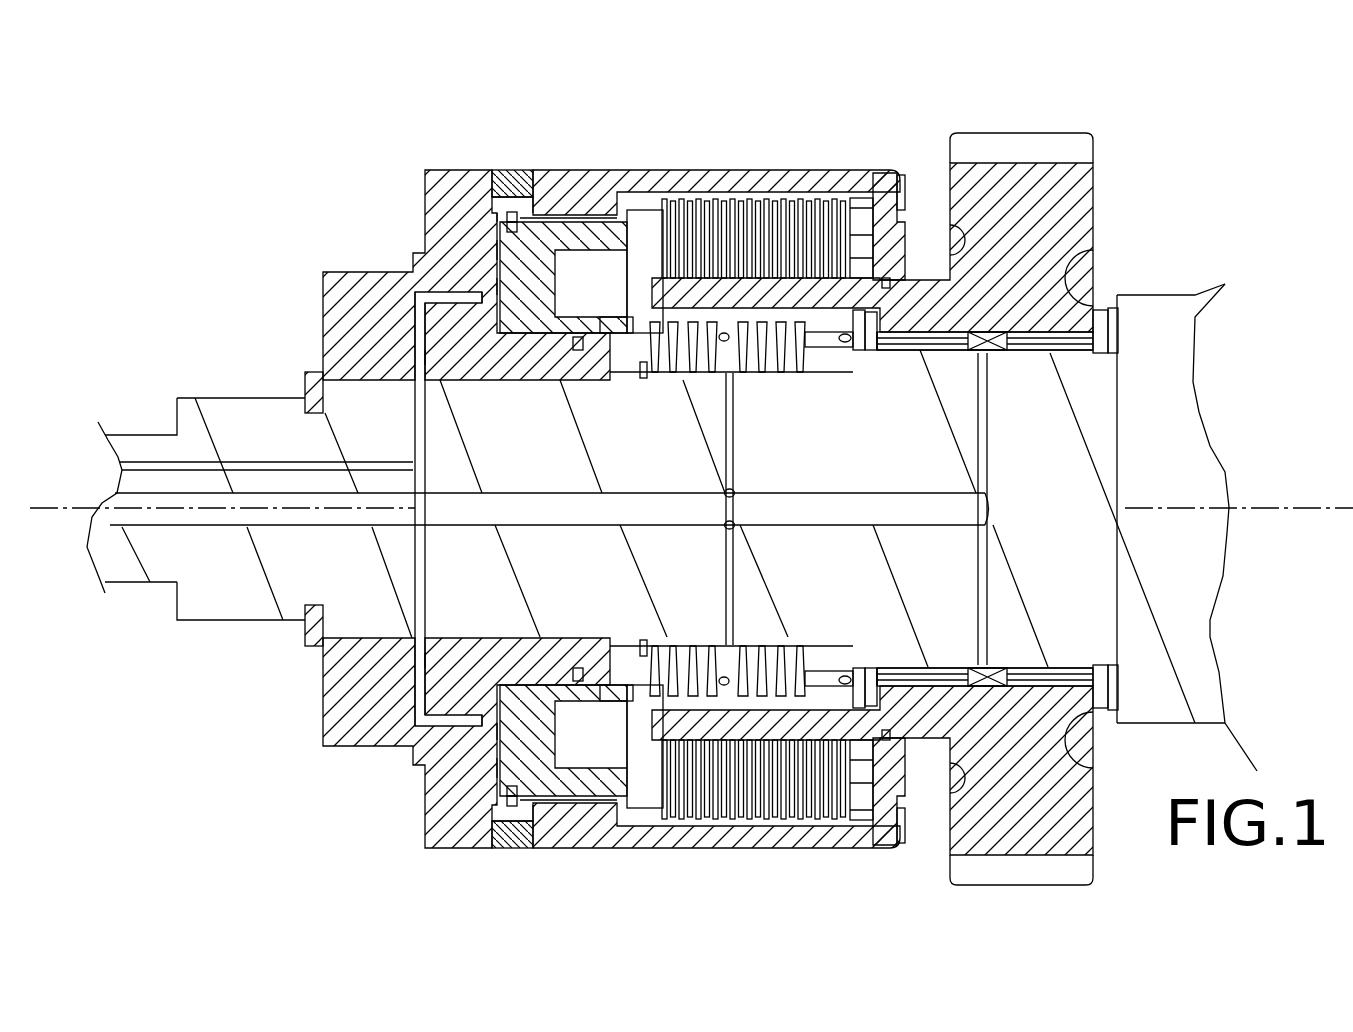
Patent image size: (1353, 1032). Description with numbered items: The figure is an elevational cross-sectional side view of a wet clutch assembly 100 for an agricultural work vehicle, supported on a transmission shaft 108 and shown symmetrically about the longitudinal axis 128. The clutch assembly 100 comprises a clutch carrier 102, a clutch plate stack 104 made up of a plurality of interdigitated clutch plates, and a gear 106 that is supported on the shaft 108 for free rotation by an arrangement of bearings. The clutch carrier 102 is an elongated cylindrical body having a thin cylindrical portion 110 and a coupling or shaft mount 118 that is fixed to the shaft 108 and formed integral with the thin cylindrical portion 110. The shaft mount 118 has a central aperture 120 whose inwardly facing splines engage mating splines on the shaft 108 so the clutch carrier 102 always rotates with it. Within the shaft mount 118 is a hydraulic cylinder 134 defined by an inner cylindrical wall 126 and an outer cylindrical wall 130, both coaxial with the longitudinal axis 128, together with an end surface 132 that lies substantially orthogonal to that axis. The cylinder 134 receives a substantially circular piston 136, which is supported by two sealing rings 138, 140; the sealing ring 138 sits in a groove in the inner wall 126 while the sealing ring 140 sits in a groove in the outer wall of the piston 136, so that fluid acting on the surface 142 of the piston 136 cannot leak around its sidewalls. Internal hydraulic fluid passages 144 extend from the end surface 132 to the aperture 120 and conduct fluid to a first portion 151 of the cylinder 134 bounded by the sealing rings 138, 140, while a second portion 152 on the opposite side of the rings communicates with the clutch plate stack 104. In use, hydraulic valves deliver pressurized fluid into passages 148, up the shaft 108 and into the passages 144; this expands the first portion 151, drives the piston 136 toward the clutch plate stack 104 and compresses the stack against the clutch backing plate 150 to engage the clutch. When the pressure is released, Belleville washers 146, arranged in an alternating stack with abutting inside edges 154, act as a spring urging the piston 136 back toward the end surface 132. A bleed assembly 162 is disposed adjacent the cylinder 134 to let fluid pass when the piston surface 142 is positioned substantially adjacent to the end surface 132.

The clutch assembly 100 is at (186, 148).
The clutch carrier 102 is at (717, 170).
The clutch plate stack 104 is at (783, 207).
The gear 106 is at (1075, 195).
The shaft 108 is at (1164, 295).
The thin cylindrical portion 110 is at (878, 138).
The shaft mount 118 is at (268, 170).
The central aperture 120 is at (355, 637).
The inner cylindrical wall 126 is at (650, 527).
The longitudinal axis 128 is at (73, 510).
The outer cylindrical wall 130 is at (598, 218).
The end surface 132 is at (497, 285).
The hydraulic cylinder 134 is at (468, 238).
The piston 136 is at (540, 290).
The sealing ring 138 is at (582, 350).
The sealing ring 140 is at (522, 222).
The piston surface 142 is at (495, 280).
The internal hydraulic fluid passages 144 is at (425, 350).
The Belleville washers 146 is at (660, 376).
The passages 148 is at (240, 460).
The clutch backing plate 150 is at (887, 185).
The first portion of cylinder 151 is at (478, 212).
The second portion of cylinder 152 is at (617, 213).
The abutting inside edges 154 is at (805, 376).
The bleed assembly 162 is at (488, 138).